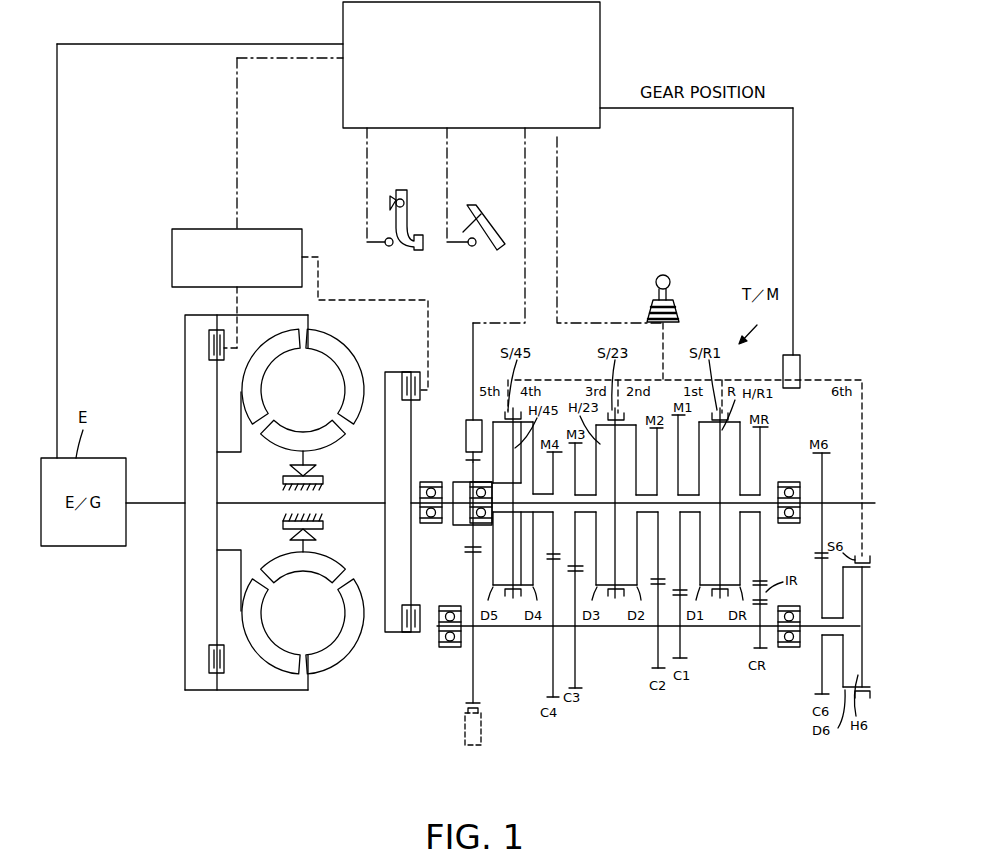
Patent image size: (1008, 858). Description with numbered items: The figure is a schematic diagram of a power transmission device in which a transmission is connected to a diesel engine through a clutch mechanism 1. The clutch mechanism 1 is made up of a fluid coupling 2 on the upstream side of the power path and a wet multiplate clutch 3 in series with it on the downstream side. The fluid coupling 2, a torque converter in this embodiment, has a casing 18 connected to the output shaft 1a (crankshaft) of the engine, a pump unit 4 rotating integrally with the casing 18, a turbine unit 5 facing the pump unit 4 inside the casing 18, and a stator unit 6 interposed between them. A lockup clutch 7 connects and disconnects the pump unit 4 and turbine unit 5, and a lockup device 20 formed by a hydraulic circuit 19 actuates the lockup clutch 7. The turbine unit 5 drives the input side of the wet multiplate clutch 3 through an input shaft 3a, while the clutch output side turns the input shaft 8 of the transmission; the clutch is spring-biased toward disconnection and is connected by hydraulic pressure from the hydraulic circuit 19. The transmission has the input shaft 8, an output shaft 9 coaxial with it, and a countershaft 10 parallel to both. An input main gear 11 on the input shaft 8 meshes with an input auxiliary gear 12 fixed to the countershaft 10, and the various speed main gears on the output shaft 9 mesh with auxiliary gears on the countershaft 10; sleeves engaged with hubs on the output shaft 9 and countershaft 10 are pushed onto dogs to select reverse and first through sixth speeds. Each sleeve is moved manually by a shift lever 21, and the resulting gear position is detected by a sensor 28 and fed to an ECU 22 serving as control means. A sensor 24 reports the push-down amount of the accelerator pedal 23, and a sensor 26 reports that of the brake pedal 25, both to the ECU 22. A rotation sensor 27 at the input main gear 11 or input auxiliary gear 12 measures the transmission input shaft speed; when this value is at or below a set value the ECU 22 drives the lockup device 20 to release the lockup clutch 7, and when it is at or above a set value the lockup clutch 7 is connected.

The clutch mechanism 1 is at (353, 313).
The output shaft 1a is at (155, 500).
The fluid coupling 2 is at (336, 676).
The wet multiplate clutch 3 is at (408, 366).
The input shaft 3a is at (353, 504).
The pump unit 4 is at (353, 355).
The turbine unit 5 is at (281, 332).
The stator unit 6 is at (335, 447).
The lockup clutch 7 is at (208, 350).
The input shaft 8 is at (411, 500).
The output shaft 9 is at (832, 503).
The countershaft 10 is at (512, 627).
The input main gear 11 is at (468, 539).
The input auxiliary gear 12 is at (471, 702).
The casing 18 is at (263, 692).
The hydraulic circuit 19 is at (172, 248).
The lockup device 20 is at (194, 305).
The shift lever 21 is at (655, 277).
The ECU 22 is at (600, 42).
The accelerator pedal 23 is at (478, 211).
The sensor 24 is at (474, 247).
The brake pedal 25 is at (401, 190).
The sensor 26 is at (388, 247).
The rotation sensor 27 is at (465, 440).
The sensor 28 is at (800, 372).